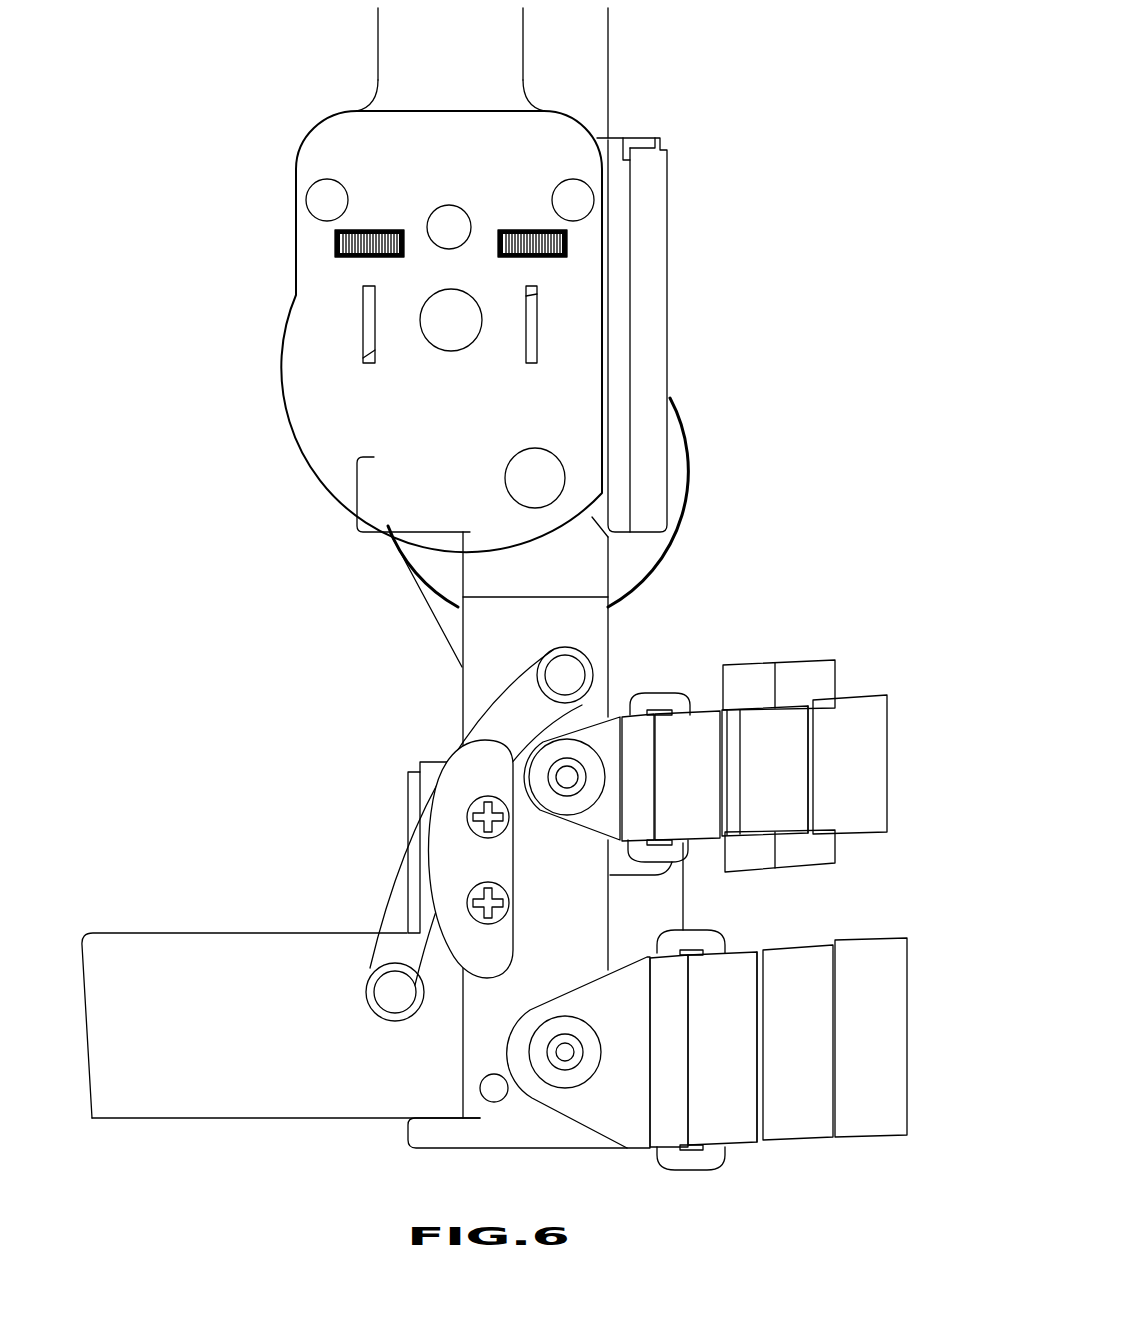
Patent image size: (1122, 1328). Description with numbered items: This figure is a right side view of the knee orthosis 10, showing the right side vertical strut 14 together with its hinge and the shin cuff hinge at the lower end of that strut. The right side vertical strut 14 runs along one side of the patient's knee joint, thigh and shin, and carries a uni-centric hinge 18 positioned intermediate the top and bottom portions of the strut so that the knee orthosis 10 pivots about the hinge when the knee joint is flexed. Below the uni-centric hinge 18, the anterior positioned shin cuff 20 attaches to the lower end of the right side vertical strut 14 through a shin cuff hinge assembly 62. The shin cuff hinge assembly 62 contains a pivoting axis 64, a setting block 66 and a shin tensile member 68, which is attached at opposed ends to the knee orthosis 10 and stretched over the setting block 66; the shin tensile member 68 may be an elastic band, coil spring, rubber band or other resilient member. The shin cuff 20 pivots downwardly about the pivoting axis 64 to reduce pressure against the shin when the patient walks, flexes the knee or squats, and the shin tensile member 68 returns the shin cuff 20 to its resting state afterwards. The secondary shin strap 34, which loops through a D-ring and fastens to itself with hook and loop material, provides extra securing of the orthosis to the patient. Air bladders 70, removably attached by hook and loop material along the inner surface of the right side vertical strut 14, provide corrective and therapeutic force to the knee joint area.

The knee orthosis 10 is at (222, 152).
The right side vertical strut 14 is at (403, 50).
The uni-centric hinge 18 is at (325, 313).
The shin cuff 20 is at (193, 1093).
The secondary shin strap 34 is at (850, 727).
The shin cuff hinge assembly 62 is at (527, 995).
The pivoting axis 64 is at (494, 1100).
The setting block 66 is at (460, 848).
The shin tensile member 68 is at (400, 893).
The air bladder 70 is at (618, 338).